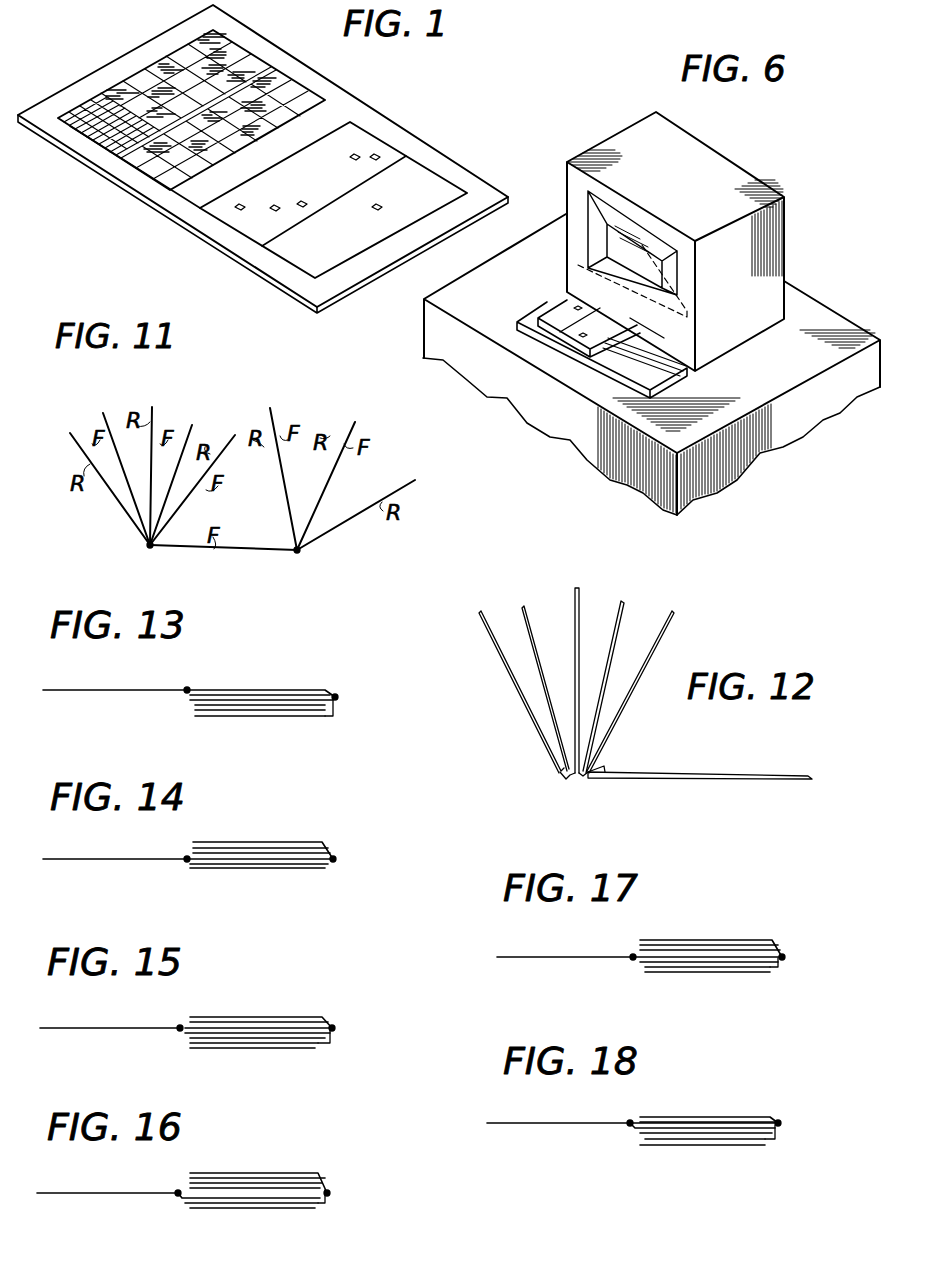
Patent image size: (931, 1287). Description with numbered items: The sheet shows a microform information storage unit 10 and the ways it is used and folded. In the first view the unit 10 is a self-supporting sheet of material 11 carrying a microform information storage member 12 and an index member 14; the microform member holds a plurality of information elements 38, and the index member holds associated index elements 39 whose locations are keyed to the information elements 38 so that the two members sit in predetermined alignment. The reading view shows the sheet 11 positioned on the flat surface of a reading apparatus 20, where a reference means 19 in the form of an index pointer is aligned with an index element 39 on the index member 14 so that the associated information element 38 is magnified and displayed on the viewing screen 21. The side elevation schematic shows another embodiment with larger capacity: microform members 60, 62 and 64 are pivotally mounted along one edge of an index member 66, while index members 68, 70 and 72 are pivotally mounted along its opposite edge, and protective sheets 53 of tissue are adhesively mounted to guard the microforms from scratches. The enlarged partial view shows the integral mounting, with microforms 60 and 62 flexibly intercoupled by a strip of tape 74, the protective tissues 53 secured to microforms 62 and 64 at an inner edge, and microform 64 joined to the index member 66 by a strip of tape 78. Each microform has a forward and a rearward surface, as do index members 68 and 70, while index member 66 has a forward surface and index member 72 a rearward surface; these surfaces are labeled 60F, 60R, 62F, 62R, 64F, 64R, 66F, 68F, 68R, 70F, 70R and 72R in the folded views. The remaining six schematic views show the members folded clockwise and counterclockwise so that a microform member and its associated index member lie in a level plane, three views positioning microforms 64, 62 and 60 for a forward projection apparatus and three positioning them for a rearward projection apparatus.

In FIG. 1, the microform information storage unit 10 is at (130, 205).
In FIG. 1, the self-supporting sheet of material 11 is at (387, 137).
In FIG. 6, the self-supporting sheet of material 11 is at (552, 292).
In FIG. 1, the microform information storage member 12 is at (245, 37).
In FIG. 6, the microform information storage member 12 is at (572, 264).
In FIG. 1, the index member 14 is at (433, 188).
In FIG. 6, the index member 14 is at (552, 326).
In FIG. 6, the reference means 19 is at (590, 355).
In FIG. 6, the reading apparatus 20 is at (800, 310).
In FIG. 6, the viewing screen 21 is at (660, 268).
In FIG. 1, the information elements 38 is at (70, 133).
In FIG. 6, the information elements 38 is at (662, 330).
In FIG. 1, the index elements 39 is at (233, 210).
In FIG. 6, the index elements 39 is at (565, 340).
In FIG. 11, the protective sheets 53 is at (110, 430).
In FIG. 12, the protective sheets 53 is at (530, 604).
In FIG. 11, the microform member 60 is at (70, 437).
In FIG. 12, the microform member 60 is at (488, 613).
In FIG. 13, the microform member 60 is at (228, 717).
In FIG. 14, the microform member 60 is at (298, 860).
In FIG. 15, the microform member 60 is at (250, 1040).
In FIG. 16, the microform member 60 is at (292, 1209).
In FIG. 11, the microform member 62 is at (148, 408).
In FIG. 12, the microform member 62 is at (584, 590).
In FIG. 13, the microform member 62 is at (262, 694).
In FIG. 14, the microform member 62 is at (258, 865).
In FIG. 17, the microform member 62 is at (714, 944).
In FIG. 18, the microform member 62 is at (680, 1146).
In FIG. 11, the microform member 64 is at (226, 443).
In FIG. 12, the microform member 64 is at (666, 642).
In FIG. 15, the microform member 64 is at (256, 1021).
In FIG. 16, the microform member 64 is at (218, 1205).
In FIG. 17, the microform member 64 is at (712, 963).
In FIG. 18, the microform member 64 is at (714, 1121).
In FIG. 11, the index member 66 is at (248, 549).
In FIG. 12, the index member 66 is at (690, 772).
In FIG. 14, the index member 66 is at (224, 869).
In FIG. 15, the index member 66 is at (300, 1021).
In FIG. 16, the index member 66 is at (248, 1205).
In FIG. 17, the index member 66 is at (682, 973).
In FIG. 18, the index member 66 is at (754, 1122).
In FIG. 11, the index member 68 is at (273, 410).
In FIG. 13, the index member 68 is at (296, 706).
In FIG. 16, the index member 68 is at (294, 1182).
In FIG. 17, the index member 68 is at (754, 949).
In FIG. 18, the index member 68 is at (752, 1140).
In FIG. 11, the index member 70 is at (356, 424).
In FIG. 13, the index member 70 is at (250, 711).
In FIG. 14, the index member 70 is at (296, 852).
In FIG. 15, the index member 70 is at (218, 1048).
In FIG. 18, the index member 70 is at (712, 1134).
In FIG. 11, the index member 72 is at (416, 482).
In FIG. 13, the index member 72 is at (300, 699).
In FIG. 14, the index member 72 is at (260, 847).
In FIG. 15, the index member 72 is at (295, 1044).
In FIG. 16, the index member 72 is at (252, 1177).
In FIG. 17, the index member 72 is at (752, 968).
In FIG. 12, the strip of tape 74 is at (565, 781).
In FIG. 12, the strip of tape 78 is at (604, 766).
In FIG. 13, the front of strip 64 64F is at (132, 690).
In FIG. 13, the front of strip 66 66F is at (234, 689).
In FIG. 14, the rear of strip 64 64R is at (132, 860).
In FIG. 14, the rear of strip 68 68R is at (235, 841).
In FIG. 15, the front of strip 62 62F is at (128, 1029).
In FIG. 15, the front of strip 68 68F is at (232, 1016).
In FIG. 16, the rear of strip 62 62R is at (130, 1193).
In FIG. 16, the rear of strip 70 70R is at (233, 1176).
In FIG. 17, the front of strip 60 60F is at (586, 956).
In FIG. 17, the front of strip 70 70F is at (690, 940).
In FIG. 18, the rear of strip 60 60R is at (588, 1124).
In FIG. 18, the rear of strip 72 72R is at (688, 1117).